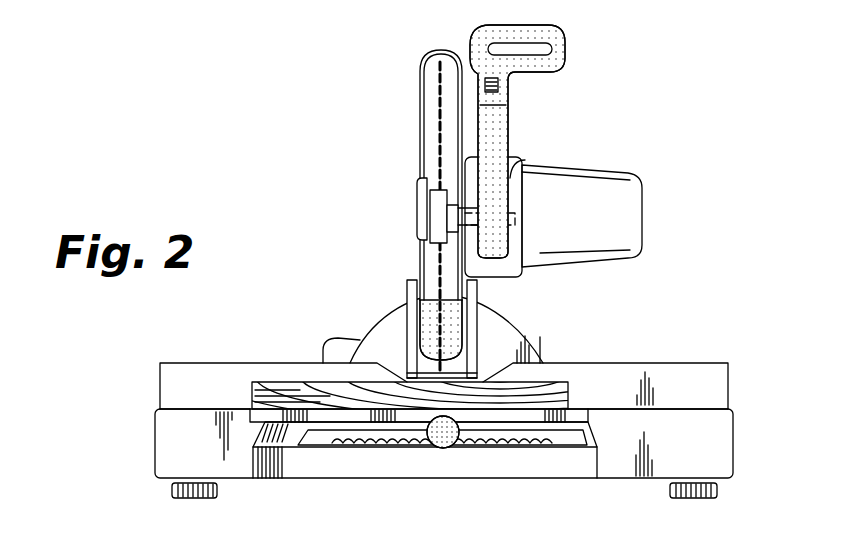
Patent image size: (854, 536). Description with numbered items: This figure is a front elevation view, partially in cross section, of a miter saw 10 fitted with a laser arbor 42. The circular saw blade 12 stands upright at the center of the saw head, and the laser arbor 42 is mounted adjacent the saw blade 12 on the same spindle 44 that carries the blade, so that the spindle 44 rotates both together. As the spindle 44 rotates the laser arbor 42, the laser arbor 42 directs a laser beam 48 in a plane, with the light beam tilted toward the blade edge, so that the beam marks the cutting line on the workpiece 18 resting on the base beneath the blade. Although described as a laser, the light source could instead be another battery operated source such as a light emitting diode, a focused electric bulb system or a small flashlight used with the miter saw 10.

The miter saw 10 is at (692, 293).
The circular saw blade 12 is at (442, 142).
The workpiece 18 is at (153, 0).
The laser arbor 42 is at (422, 200).
The spindle 44 is at (512, 158).
The laser beam 48 is at (428, 276).
The workpiece W is at (500, 376).